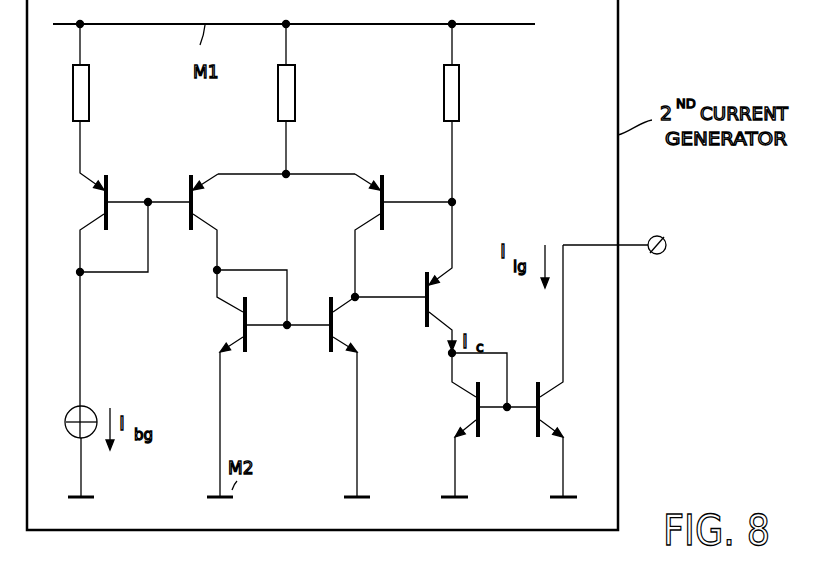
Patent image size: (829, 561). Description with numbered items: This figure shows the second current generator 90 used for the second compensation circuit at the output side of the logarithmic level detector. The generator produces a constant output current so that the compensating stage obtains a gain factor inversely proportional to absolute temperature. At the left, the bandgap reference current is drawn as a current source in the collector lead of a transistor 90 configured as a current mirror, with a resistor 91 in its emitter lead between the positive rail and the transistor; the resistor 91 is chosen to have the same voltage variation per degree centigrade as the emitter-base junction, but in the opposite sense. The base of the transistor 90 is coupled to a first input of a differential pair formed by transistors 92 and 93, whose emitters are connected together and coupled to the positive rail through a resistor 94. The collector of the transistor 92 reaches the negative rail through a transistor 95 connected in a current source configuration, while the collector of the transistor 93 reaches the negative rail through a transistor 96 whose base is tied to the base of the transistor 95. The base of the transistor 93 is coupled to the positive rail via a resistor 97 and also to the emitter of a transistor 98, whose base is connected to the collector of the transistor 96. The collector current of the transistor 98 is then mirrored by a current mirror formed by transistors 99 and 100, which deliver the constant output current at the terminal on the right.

The second current generator / transistor 90 is at (92, 202).
The resistor 91 is at (89, 93).
The transistor 92 is at (215, 201).
The transistor 93 is at (358, 200).
The resistor 94 is at (296, 93).
The transistor 95 is at (222, 322).
The transistor 96 is at (345, 322).
The resistor 97 is at (459, 95).
The transistor 98 is at (450, 297).
The transistor 99 is at (460, 406).
The transistor 100 is at (555, 403).